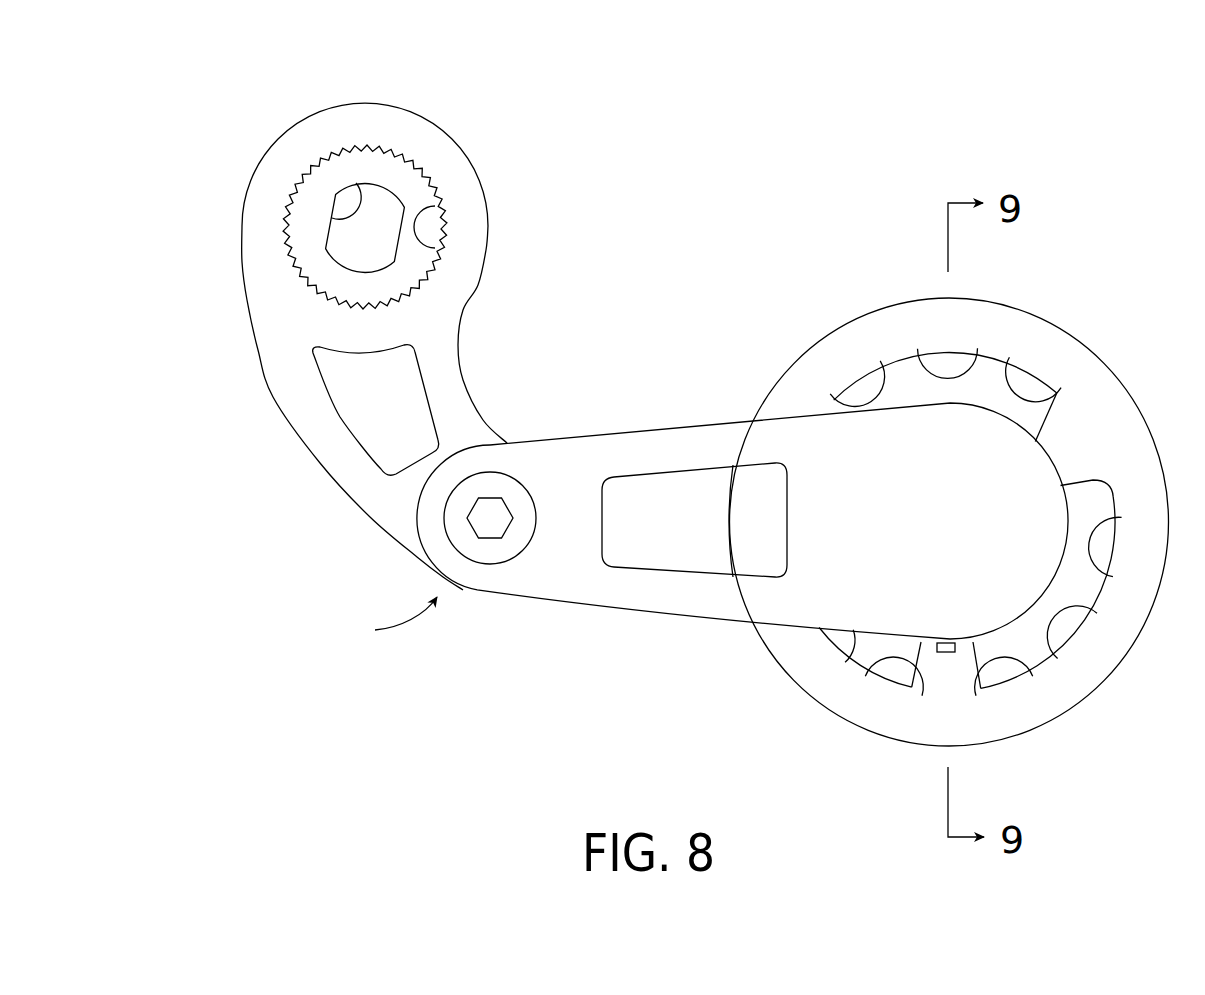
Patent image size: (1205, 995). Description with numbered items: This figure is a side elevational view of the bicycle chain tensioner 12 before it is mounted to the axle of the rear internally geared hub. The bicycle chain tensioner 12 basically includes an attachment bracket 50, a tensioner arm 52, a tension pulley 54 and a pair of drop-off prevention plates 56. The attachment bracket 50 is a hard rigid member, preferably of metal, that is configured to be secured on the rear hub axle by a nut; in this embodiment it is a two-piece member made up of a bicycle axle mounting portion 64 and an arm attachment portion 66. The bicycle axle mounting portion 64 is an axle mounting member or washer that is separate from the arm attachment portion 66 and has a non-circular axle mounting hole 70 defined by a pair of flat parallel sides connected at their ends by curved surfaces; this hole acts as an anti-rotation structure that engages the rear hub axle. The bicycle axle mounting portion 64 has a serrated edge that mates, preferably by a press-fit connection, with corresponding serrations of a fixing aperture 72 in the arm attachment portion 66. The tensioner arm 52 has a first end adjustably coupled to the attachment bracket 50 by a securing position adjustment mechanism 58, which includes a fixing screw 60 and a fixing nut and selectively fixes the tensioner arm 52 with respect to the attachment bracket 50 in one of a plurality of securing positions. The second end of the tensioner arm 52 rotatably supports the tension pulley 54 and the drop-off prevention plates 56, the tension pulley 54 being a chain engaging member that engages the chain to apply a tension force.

The bicycle chain tensioner 12 is at (778, 99).
The attachment bracket 50 is at (177, 218).
The tensioner arm 52 is at (650, 615).
The tension pulley 54 is at (992, 377).
The drop-off prevention plates 56 is at (857, 318).
The securing position adjustment mechanism 58 is at (388, 624).
The fixing screw 60 is at (525, 488).
The bicycle axle mounting portion 64 is at (305, 230).
The arm attachment portion 66 is at (298, 387).
The non-circular axle mounting hole 70 is at (361, 200).
The fixing aperture 72 is at (440, 250).